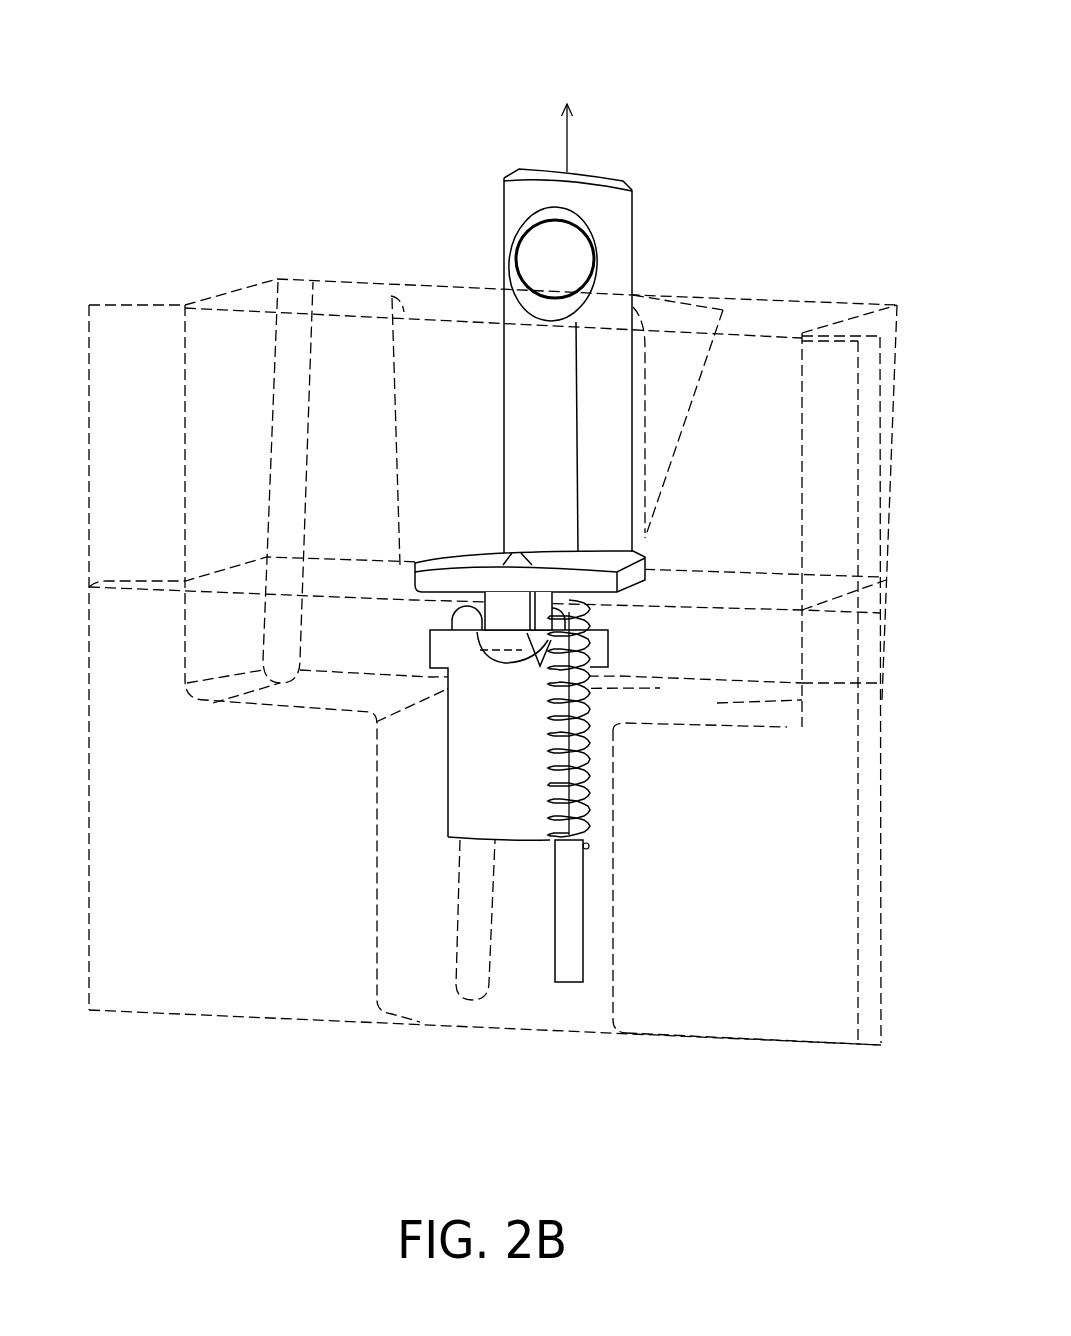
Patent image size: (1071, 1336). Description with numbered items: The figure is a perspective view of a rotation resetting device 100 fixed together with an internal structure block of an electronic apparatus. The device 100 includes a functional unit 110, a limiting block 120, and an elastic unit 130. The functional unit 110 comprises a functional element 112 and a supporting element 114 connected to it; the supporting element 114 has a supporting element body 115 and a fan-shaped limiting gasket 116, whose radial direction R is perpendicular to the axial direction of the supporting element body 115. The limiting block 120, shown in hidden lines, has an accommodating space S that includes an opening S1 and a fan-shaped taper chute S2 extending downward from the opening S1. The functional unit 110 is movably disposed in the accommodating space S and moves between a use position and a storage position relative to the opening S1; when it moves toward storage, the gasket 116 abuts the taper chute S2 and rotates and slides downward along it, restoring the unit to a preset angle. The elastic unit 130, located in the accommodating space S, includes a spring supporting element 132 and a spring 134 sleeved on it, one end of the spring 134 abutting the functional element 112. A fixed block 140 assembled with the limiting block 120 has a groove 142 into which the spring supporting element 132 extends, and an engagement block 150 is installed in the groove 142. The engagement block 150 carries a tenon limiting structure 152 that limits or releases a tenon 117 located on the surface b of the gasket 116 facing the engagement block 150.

The rotation resetting device 100 is at (782, 60).
The functional unit 110 is at (453, 374).
The functional element 112 is at (563, 245).
The supporting element 114 is at (655, 371).
The supporting element body 115 is at (603, 268).
The fan-shaped limiting gasket 116 is at (633, 296).
The tenon 117 is at (520, 655).
The limiting block 120 is at (837, 400).
The elastic unit 130 is at (660, 875).
The spring supporting element 132 is at (567, 932).
The spring 134 is at (597, 785).
The fixed block 140 is at (807, 778).
The groove 142 is at (472, 927).
The engagement block 150 is at (495, 765).
The tenon limiting structure 152 is at (465, 617).
The accommodating space S is at (363, 146).
The opening S1 is at (393, 295).
The fan-shaped taper chute S2 is at (395, 463).
The radial direction R is at (515, 548).
The surface b is at (440, 598).